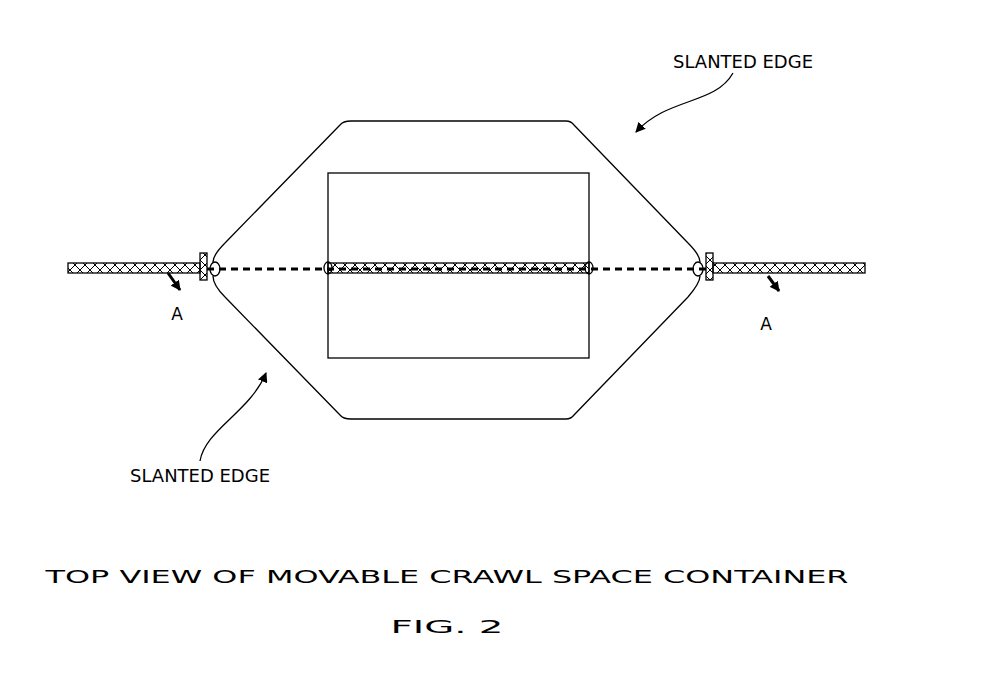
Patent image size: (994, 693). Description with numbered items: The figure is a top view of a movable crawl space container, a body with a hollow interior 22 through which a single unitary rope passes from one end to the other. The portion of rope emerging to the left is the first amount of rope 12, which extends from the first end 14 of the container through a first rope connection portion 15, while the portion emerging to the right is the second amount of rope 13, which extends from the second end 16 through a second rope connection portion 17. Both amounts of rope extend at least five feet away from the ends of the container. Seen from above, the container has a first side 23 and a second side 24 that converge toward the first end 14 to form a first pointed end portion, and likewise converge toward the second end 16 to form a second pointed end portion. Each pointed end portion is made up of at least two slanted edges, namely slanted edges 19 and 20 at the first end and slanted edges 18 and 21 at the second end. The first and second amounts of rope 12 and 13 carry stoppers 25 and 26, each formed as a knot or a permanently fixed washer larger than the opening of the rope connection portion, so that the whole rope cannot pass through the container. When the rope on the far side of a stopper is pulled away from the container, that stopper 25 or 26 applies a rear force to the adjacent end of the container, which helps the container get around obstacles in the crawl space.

The first amount of rope 12 is at (83, 263).
The second amount of rope 13 is at (862, 273).
The first end 14 is at (201, 325).
The first rope connection portion 15 is at (203, 246).
The second end 16 is at (749, 250).
The second rope connection portion 17 is at (719, 300).
The slanted edge 18 is at (637, 355).
The slanted edge 19 is at (317, 387).
The slanted edge 20 is at (293, 177).
The slanted edge 21 is at (648, 197).
The hollow interior 22 is at (456, 303).
The first side 23 is at (434, 97).
The second side 24 is at (473, 452).
The stopper 25 is at (200, 256).
The stopper 26 is at (710, 253).